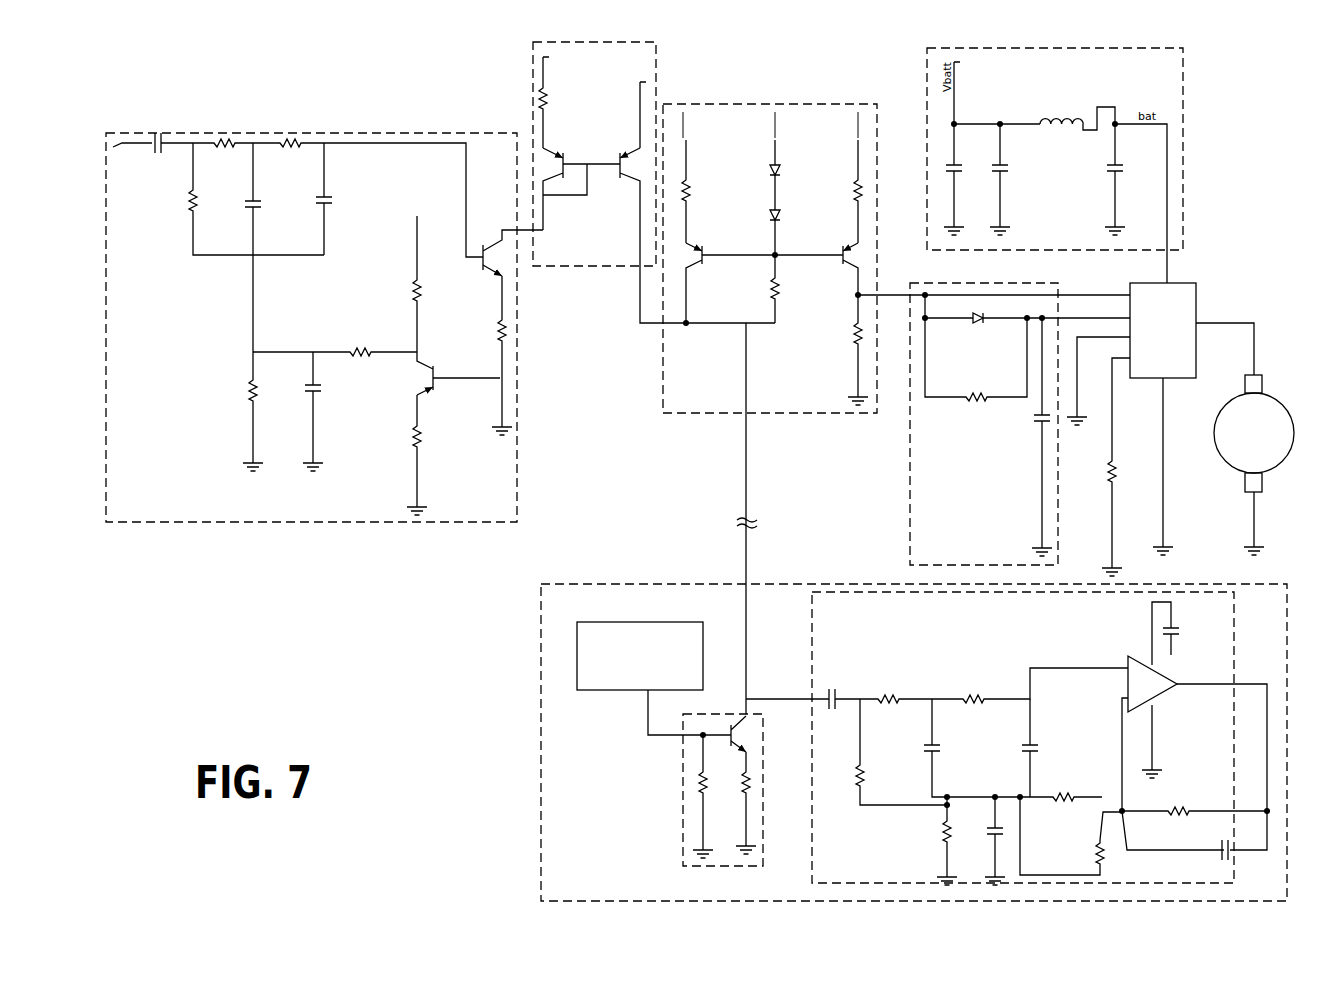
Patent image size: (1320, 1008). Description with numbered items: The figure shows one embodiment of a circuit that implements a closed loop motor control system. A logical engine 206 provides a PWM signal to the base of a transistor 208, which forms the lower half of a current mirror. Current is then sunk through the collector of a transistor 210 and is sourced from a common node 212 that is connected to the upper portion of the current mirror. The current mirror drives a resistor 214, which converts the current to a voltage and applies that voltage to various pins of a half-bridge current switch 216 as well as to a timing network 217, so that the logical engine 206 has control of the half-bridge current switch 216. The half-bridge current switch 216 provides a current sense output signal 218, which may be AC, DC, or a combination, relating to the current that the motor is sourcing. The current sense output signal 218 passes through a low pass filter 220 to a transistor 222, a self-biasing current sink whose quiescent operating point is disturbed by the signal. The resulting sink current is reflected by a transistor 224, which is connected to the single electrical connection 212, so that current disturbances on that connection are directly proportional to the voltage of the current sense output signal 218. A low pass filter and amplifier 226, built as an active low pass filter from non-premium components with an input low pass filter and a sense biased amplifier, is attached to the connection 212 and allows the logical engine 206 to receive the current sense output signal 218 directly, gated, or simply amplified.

The logical engine 206 is at (567, 660).
The transistor 208 is at (717, 735).
The transistor 210 is at (651, 142).
The common node 212 is at (746, 476).
The resistor 214 is at (848, 350).
The half-bridge current switch 216 is at (1201, 270).
The timing network 217 is at (900, 521).
The current sense output signal 218 is at (115, 128).
The low pass filter 220 is at (192, 532).
The transistor 222 is at (438, 410).
The transistor 224 is at (532, 150).
The low pass filter and amplifier 226 is at (803, 855).